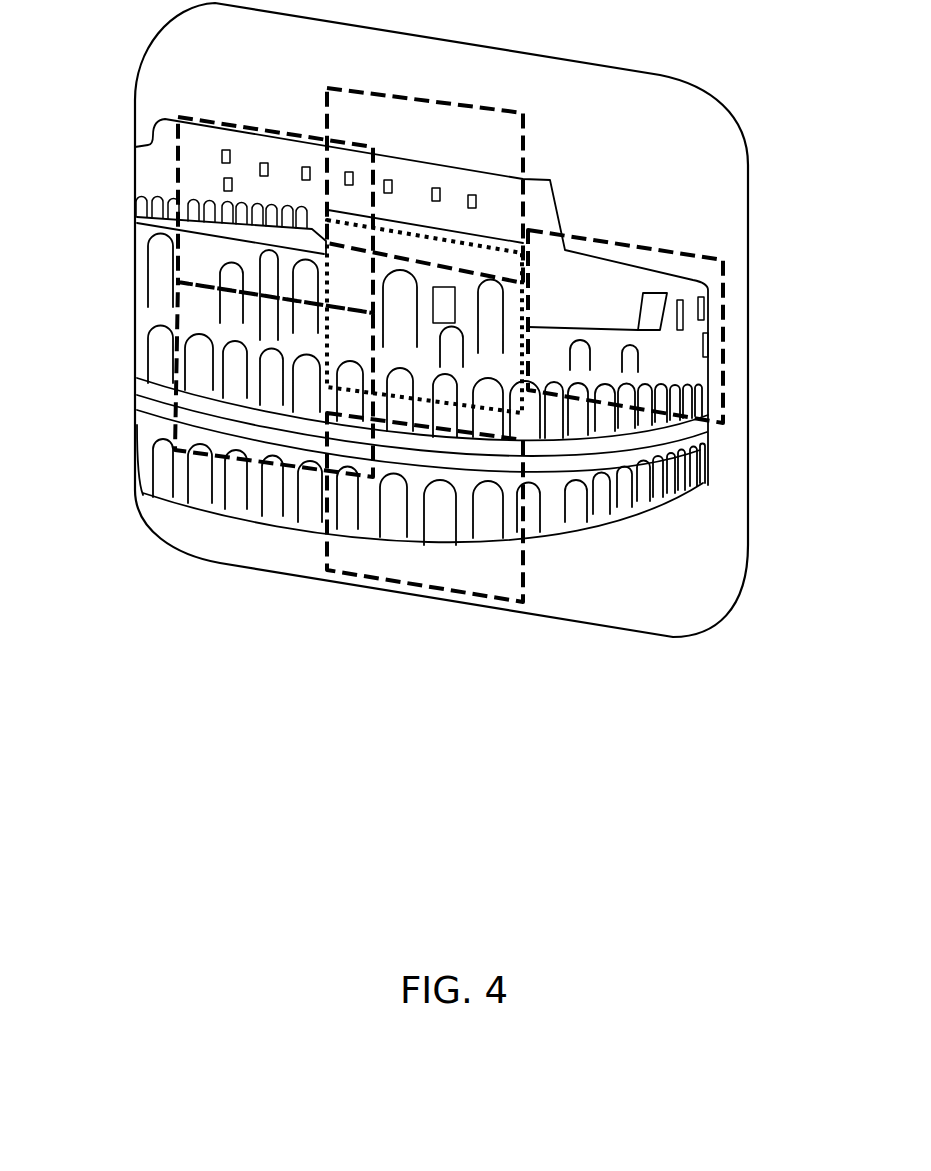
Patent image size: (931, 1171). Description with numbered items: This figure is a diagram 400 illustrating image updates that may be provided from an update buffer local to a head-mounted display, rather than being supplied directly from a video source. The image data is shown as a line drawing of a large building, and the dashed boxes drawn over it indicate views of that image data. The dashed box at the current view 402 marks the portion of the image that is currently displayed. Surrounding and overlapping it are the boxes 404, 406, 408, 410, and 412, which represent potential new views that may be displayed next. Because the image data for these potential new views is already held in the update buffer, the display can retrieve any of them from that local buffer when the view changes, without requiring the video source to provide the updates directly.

The user interface / image view 400 is at (481, 957).
The current view 402 is at (522, 412).
The potential new view 404 is at (663, 251).
The potential new view 406 is at (397, 95).
The potential new view 408 is at (420, 586).
The potential new view 410 is at (248, 126).
The potential new view 412 is at (137, 308).